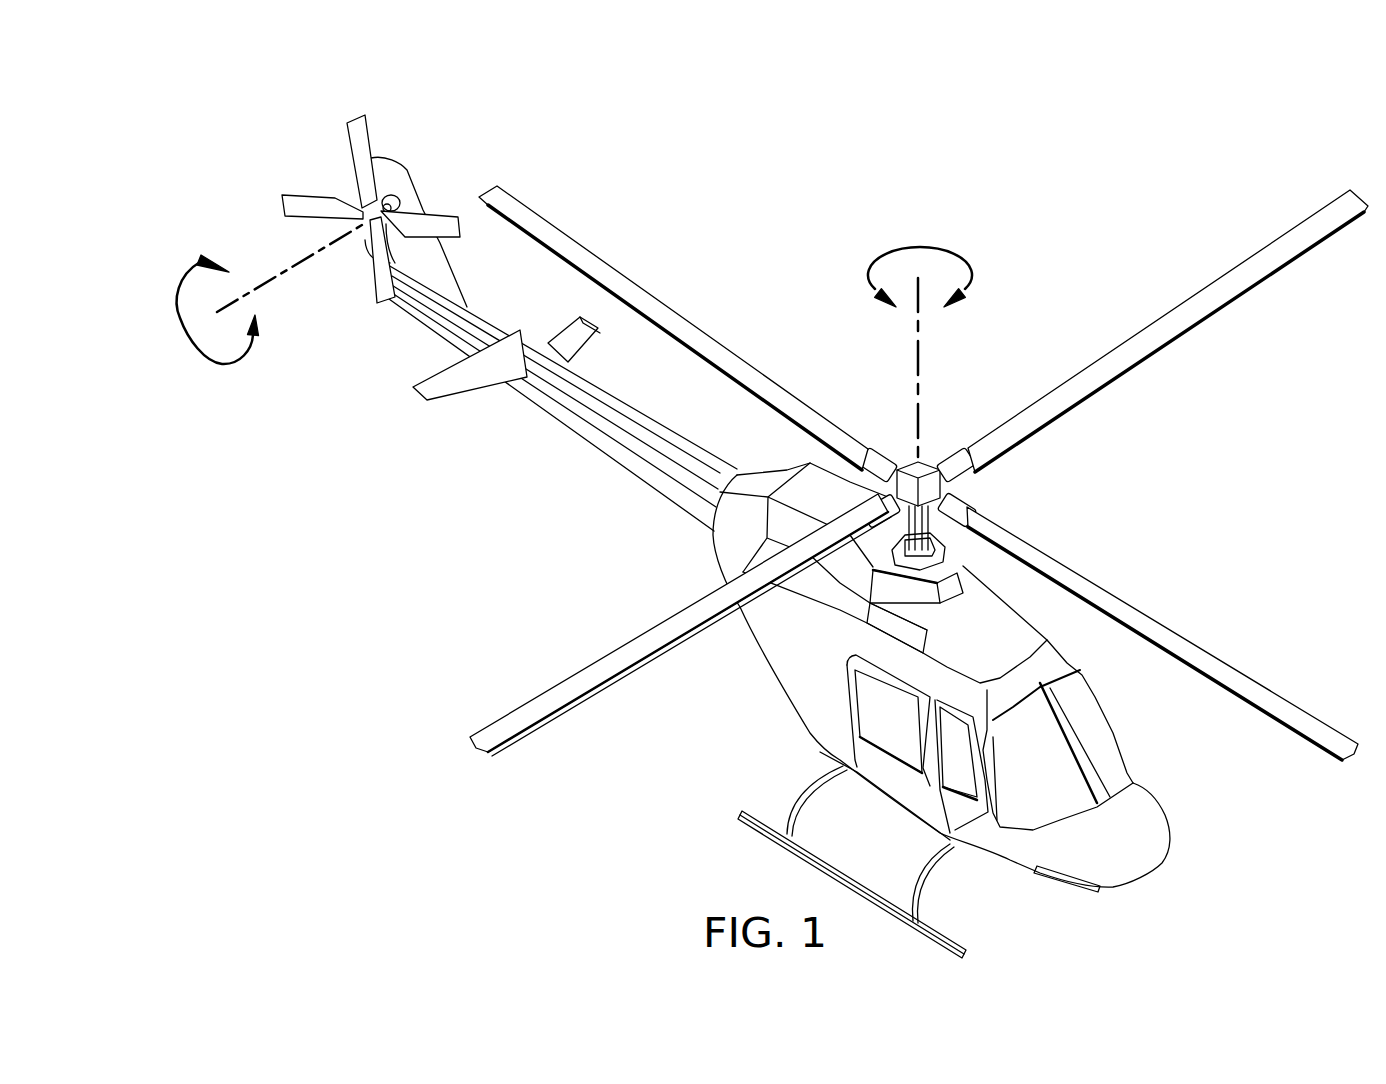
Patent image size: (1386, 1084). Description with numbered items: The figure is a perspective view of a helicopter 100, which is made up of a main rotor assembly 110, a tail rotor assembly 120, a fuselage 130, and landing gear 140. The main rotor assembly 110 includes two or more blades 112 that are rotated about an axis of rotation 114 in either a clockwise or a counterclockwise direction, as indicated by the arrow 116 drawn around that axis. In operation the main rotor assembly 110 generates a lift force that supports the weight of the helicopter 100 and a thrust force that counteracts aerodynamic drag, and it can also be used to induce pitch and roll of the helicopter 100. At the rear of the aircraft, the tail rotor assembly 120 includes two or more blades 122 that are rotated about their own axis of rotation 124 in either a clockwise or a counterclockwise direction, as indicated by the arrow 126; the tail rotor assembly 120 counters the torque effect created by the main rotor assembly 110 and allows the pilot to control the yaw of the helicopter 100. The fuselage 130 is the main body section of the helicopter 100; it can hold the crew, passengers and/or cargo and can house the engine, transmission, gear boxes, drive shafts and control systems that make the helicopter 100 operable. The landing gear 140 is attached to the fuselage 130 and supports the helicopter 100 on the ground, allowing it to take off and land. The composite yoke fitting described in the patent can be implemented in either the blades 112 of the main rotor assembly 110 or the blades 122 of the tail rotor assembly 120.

The helicopter 100 is at (870, 190).
The main rotor assembly 110 is at (878, 411).
The blades 112 is at (643, 287).
The axis of rotation 114 is at (922, 370).
The arrow 116 is at (868, 285).
The tail rotor assembly 120 is at (322, 101).
The blades 122 is at (370, 130).
The axis of rotation 124 is at (290, 268).
The arrow 126 is at (177, 297).
The fuselage 130 is at (1173, 833).
The landing gear 140 is at (947, 940).